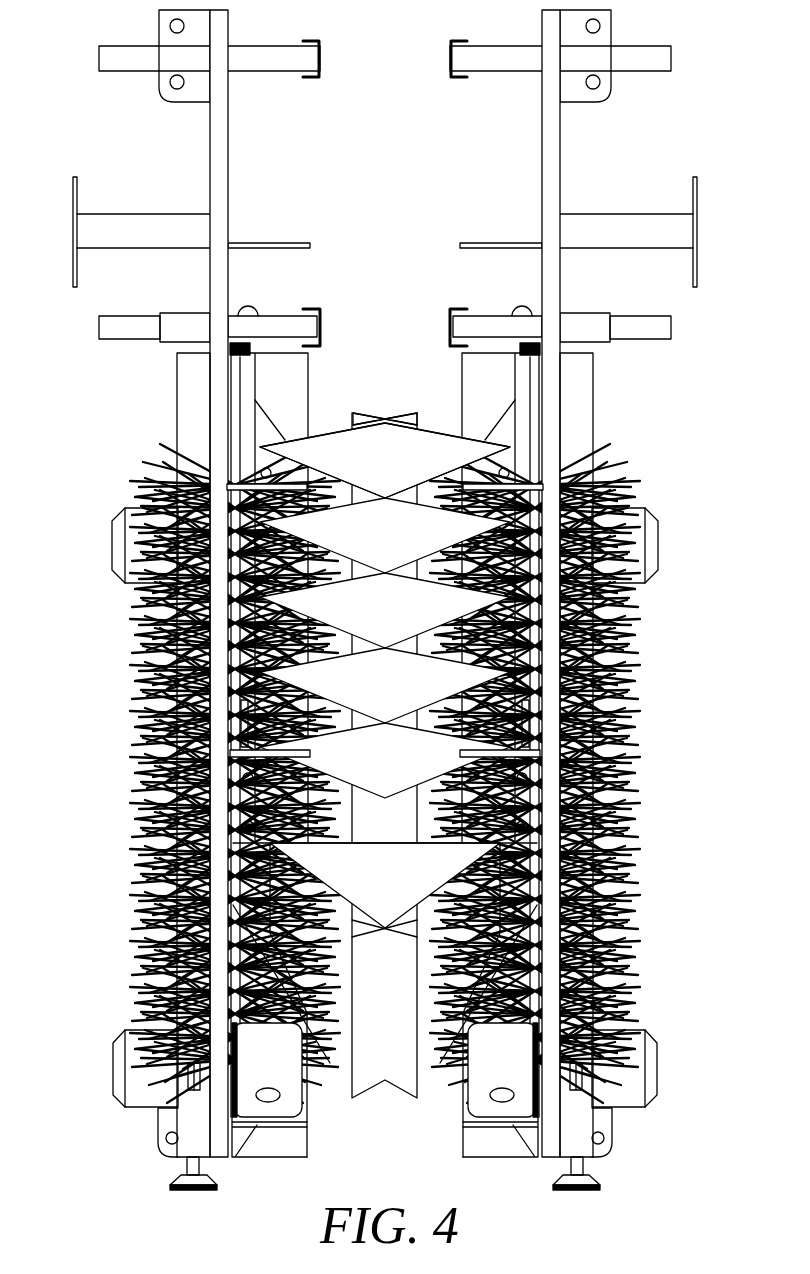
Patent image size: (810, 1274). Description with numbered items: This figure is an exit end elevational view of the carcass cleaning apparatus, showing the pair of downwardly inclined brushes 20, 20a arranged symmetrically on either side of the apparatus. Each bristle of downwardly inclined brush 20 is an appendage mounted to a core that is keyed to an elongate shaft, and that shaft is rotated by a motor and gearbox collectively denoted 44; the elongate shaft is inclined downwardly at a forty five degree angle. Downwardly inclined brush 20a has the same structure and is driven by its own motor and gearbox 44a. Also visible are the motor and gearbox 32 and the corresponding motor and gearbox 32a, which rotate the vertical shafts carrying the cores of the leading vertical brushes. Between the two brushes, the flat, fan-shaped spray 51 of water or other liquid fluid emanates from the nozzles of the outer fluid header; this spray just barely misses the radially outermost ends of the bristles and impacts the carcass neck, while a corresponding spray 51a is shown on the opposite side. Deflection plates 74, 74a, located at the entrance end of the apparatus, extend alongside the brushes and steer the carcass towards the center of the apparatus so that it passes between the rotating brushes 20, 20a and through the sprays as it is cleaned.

The downwardly inclined brush 20 is at (132, 855).
The downwardly inclined brush 20a is at (620, 730).
The motor and gearbox 32 is at (112, 536).
The upper bearing mount 32a is at (660, 527).
The motor and gearbox 44 is at (128, 1090).
The lower bearing mount 44a is at (640, 1085).
The flat, fan-shaped spray 51 is at (320, 447).
The top scrubbing element 51a is at (440, 452).
The deflection plate 74 is at (193, 383).
The deflection plate 74a is at (588, 392).